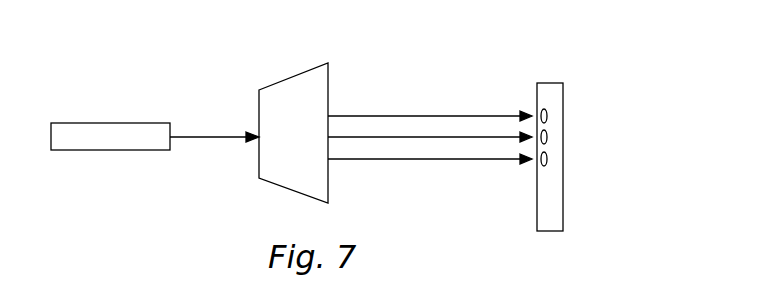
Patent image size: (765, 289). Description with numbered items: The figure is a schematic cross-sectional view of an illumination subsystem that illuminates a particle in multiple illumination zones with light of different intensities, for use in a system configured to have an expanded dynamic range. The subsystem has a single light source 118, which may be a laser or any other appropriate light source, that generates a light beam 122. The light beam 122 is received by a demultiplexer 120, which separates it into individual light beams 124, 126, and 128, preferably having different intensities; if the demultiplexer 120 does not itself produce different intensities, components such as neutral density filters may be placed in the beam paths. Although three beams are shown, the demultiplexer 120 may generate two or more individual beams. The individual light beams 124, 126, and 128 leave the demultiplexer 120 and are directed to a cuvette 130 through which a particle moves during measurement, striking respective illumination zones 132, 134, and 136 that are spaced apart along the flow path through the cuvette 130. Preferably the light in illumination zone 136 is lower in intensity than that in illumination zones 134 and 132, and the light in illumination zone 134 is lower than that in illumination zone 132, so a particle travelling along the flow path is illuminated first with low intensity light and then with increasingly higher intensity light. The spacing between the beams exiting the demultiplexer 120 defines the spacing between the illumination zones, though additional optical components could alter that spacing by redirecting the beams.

The single light source 118 is at (120, 123).
The demultiplexer 120 is at (277, 82).
The light beam 122 is at (212, 135).
The individual light beam 124 is at (403, 113).
The individual light beam 126 is at (444, 137).
The individual light beam 128 is at (422, 163).
The cuvette 130 is at (557, 217).
The illumination zone 132 is at (548, 113).
The illumination zone 134 is at (548, 136).
The illumination zone 136 is at (548, 158).